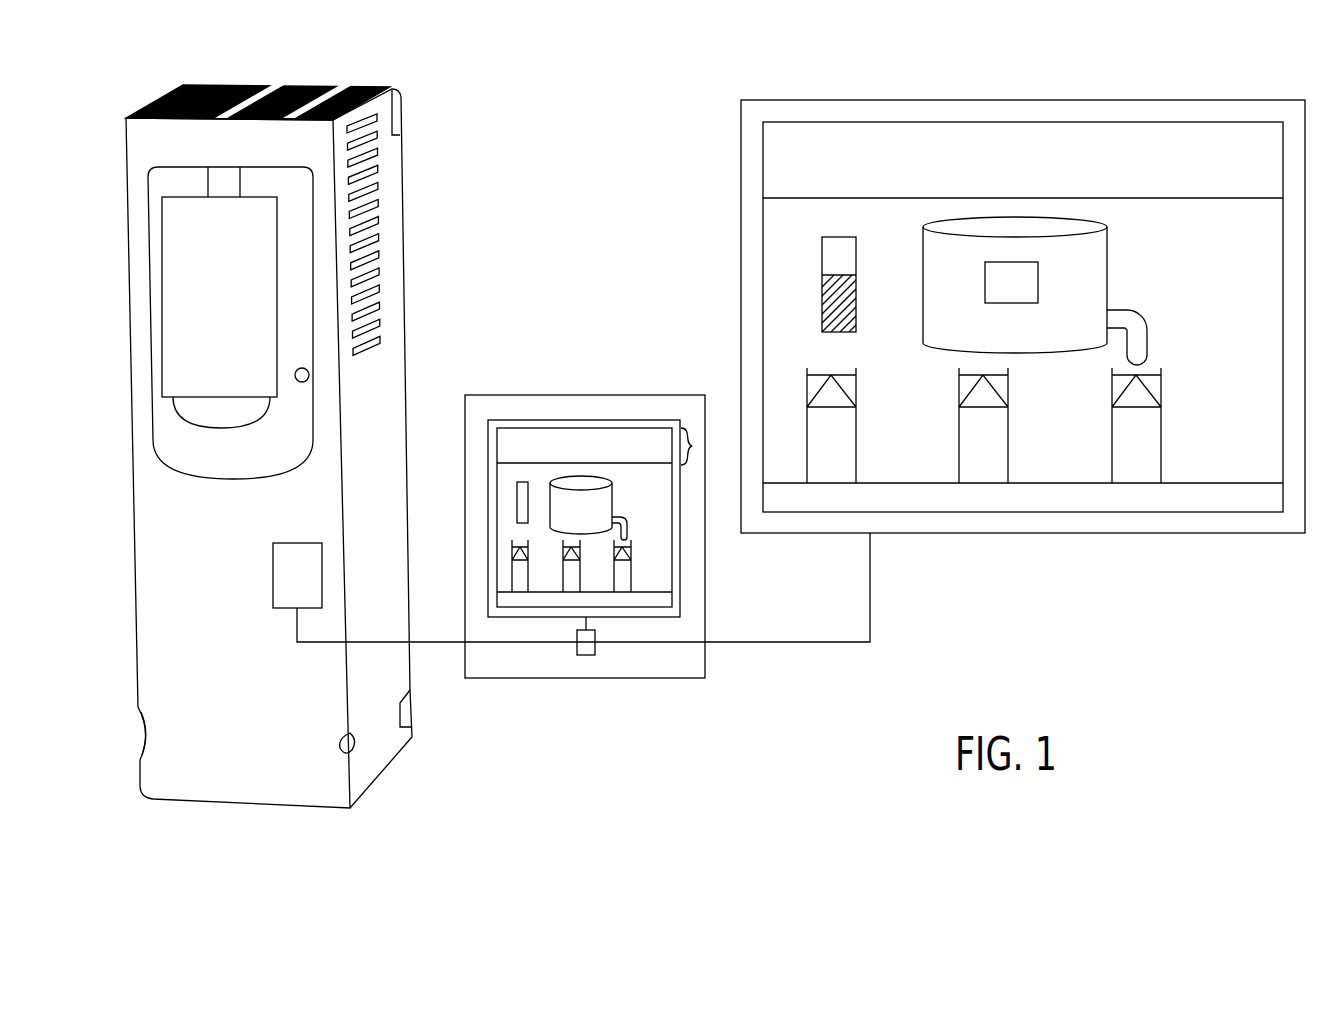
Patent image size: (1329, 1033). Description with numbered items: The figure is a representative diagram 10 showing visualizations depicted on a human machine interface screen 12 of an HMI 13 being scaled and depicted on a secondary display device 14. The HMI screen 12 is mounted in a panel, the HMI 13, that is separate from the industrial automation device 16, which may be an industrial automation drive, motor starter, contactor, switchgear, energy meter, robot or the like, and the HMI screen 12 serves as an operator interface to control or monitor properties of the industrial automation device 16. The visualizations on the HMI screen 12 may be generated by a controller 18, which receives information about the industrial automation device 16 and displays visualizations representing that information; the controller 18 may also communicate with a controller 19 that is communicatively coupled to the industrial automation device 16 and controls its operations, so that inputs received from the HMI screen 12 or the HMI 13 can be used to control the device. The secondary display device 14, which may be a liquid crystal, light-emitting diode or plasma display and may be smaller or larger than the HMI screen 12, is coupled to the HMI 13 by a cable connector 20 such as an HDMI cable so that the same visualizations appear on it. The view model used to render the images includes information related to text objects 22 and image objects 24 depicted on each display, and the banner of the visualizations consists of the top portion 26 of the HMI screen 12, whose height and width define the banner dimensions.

The representative diagram 10 is at (600, 118).
The human machine interface screen 12 is at (583, 395).
The human machine interface 13 is at (635, 678).
The secondary display device 14 is at (1025, 100).
The industrial automation device 16 is at (397, 522).
The controller 18 is at (586, 655).
The controller 19 is at (297, 542).
The cable connector 20 is at (788, 643).
The text objects 22 is at (628, 433).
The image objects 24 is at (917, 288).
The top portion 26 is at (692, 447).